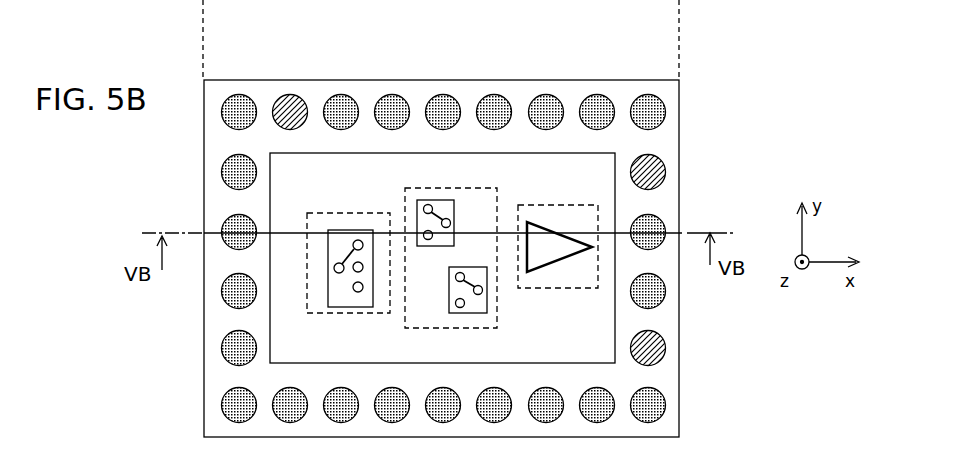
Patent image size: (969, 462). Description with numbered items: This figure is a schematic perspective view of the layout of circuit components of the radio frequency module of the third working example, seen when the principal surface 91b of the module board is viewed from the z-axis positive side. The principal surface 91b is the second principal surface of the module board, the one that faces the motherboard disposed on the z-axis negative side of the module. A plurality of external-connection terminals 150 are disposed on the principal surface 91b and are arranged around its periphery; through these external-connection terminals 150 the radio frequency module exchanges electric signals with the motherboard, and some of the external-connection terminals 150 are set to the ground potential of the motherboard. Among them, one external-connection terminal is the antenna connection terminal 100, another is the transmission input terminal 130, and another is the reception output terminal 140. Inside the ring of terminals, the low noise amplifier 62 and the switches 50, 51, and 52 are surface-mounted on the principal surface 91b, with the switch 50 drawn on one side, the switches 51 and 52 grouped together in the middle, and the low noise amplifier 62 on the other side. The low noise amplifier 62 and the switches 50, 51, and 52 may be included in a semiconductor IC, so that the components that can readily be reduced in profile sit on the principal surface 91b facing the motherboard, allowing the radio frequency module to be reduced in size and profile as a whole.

The antenna connection terminal 100 is at (286, 108).
The principal surface 91b is at (670, 124).
The transmission input terminal 130 is at (661, 160).
The reception output terminal 140 is at (665, 342).
The external-connection terminal 150 is at (227, 246).
The switch 50 is at (345, 313).
The switch 51 is at (470, 202).
The switch 52 is at (449, 277).
The low noise amplifier 62 is at (556, 291).